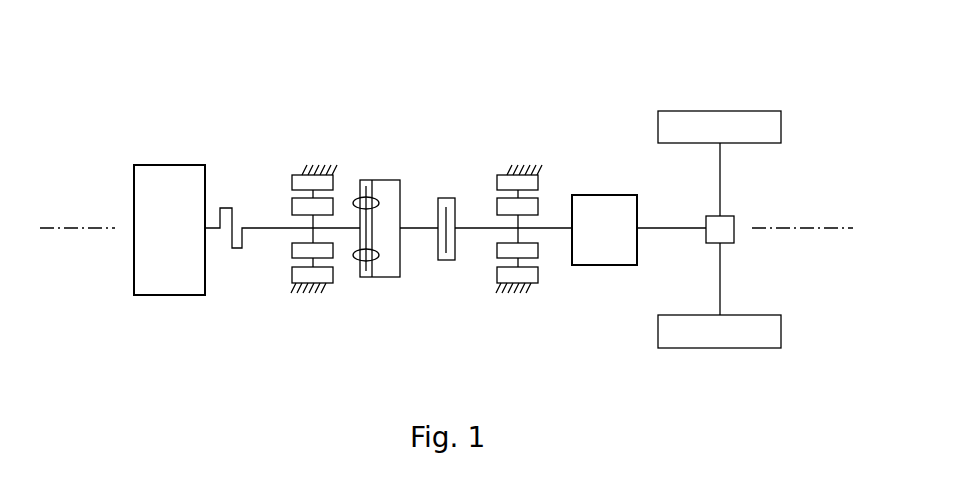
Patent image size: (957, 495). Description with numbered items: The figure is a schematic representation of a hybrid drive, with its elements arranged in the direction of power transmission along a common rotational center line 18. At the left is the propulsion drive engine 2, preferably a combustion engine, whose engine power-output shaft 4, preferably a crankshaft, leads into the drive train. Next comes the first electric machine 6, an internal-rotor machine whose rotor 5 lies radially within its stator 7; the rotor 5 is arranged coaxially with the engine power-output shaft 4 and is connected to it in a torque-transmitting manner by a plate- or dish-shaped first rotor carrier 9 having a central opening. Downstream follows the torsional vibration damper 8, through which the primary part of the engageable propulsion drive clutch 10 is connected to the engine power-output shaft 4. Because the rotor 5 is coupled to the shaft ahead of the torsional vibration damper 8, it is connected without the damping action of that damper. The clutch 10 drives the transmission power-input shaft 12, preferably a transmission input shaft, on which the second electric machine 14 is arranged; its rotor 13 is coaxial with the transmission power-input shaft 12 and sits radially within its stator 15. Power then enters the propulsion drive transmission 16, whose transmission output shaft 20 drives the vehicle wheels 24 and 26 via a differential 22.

The propulsion drive engine 2 is at (165, 165).
The engine power-output shaft 4 is at (223, 208).
The rotor 5 is at (292, 250).
The first electric machine 6 is at (304, 221).
The stator 7 is at (313, 272).
The torsional vibration damper 8 is at (361, 180).
The first rotor carrier 9 is at (422, 230).
The propulsion drive clutch 10 is at (442, 198).
The transmission power-input shaft 12 is at (480, 228).
The rotor 13 is at (497, 250).
The second electric machine 14 is at (516, 220).
The stator 15 is at (527, 272).
The propulsion drive transmission 16 is at (597, 195).
The rotational center line 18 is at (810, 232).
The transmission output shaft 20 is at (665, 232).
The differential 22 is at (735, 218).
The vehicle wheel 24 is at (710, 111).
The vehicle wheel 26 is at (713, 348).